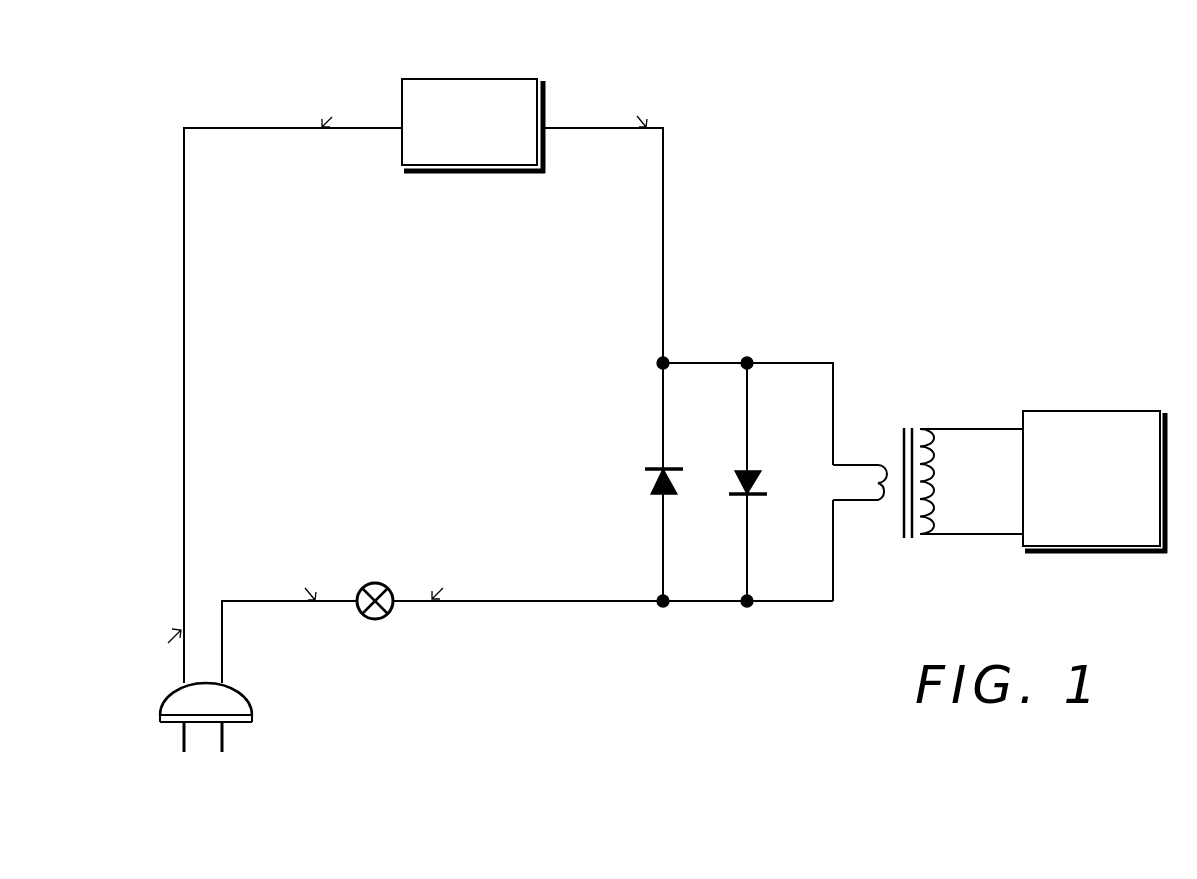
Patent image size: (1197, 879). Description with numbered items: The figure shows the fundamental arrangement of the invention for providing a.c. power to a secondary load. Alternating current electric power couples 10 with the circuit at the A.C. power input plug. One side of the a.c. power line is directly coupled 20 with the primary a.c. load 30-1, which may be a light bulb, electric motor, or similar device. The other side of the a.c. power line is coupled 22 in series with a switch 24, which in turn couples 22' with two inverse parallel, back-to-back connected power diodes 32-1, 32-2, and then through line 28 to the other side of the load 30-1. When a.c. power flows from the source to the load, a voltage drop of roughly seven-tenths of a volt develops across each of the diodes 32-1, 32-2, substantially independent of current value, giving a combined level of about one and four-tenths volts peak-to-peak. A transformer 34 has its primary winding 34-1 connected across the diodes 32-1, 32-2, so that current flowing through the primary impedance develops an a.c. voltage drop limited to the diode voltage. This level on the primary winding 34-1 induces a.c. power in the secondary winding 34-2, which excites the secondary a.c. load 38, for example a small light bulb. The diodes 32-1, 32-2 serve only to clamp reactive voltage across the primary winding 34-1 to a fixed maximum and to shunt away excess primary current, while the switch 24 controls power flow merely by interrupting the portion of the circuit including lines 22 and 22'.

The a.c. power coupling 10 is at (266, 712).
The direct coupling of line L1 20 is at (181, 200).
The series coupling of line L2-1 22 is at (282, 612).
The coupling via line L2-2 22' is at (613, 622).
The switch 24 is at (370, 622).
The line 28 is at (668, 224).
The primary a.c. load 30-1 is at (558, 100).
The power diode 32-1 is at (650, 502).
The power diode 32-2 is at (770, 504).
The transformer 34 is at (906, 422).
The primary winding 34-1 is at (867, 455).
The secondary winding 34-2 is at (942, 474).
The secondary a.c. load 38 is at (1176, 424).